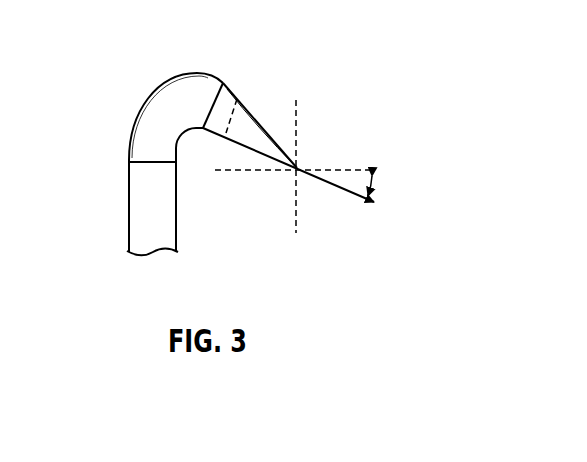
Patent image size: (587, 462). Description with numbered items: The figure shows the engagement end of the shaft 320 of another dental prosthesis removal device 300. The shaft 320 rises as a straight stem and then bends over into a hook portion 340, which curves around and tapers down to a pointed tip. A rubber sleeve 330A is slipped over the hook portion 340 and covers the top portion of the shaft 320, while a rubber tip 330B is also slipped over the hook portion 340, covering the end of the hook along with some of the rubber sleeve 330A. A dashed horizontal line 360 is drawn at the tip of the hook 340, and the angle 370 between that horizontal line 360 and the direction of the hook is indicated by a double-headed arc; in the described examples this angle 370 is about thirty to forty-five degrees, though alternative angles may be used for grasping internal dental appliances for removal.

The device 300 is at (228, 129).
The shaft 320 is at (130, 208).
The rubber sleeve 330A is at (130, 128).
The rubber tip 330B is at (262, 115).
The hook portion 340 is at (250, 90).
The horizontal line 360 is at (347, 169).
The angle 370 is at (375, 192).